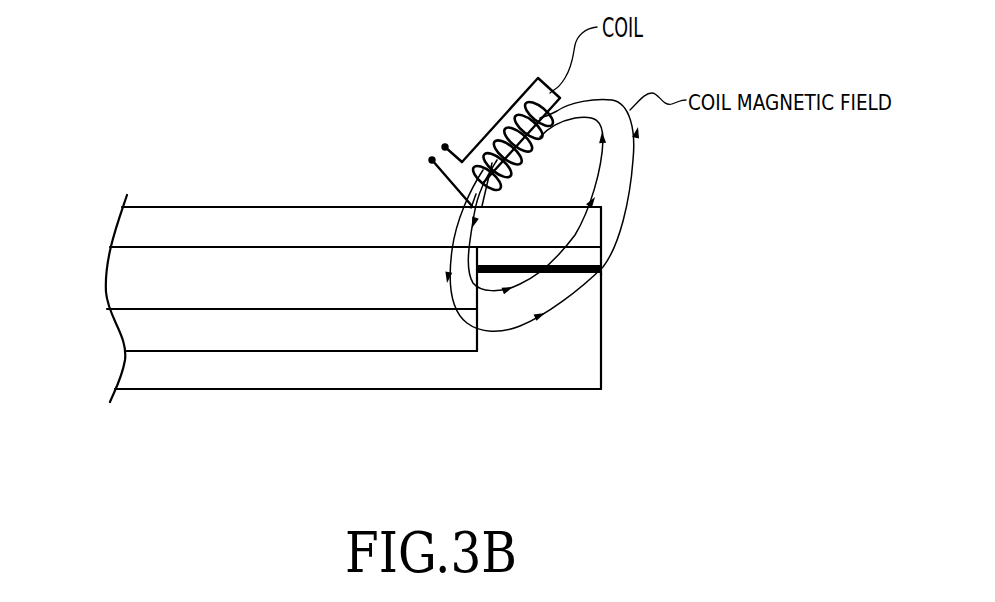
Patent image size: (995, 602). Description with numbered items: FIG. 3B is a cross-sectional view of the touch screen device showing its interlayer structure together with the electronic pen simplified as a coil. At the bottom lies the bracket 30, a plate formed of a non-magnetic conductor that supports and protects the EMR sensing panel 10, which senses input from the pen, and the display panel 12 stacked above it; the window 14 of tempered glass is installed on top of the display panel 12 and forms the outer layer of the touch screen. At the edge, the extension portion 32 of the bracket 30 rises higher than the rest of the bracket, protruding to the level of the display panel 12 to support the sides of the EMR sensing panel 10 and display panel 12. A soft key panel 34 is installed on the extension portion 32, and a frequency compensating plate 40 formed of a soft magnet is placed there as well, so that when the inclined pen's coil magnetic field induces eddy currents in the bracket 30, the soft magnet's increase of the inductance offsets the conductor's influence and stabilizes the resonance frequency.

The EMR sensing panel 10 is at (133, 332).
The display panel 12 is at (138, 281).
The window 14 is at (126, 232).
The bracket 30 is at (347, 373).
The extension portion 32 is at (588, 333).
The soft key panel 34 is at (587, 255).
The frequency compensating plate 40 is at (601, 269).